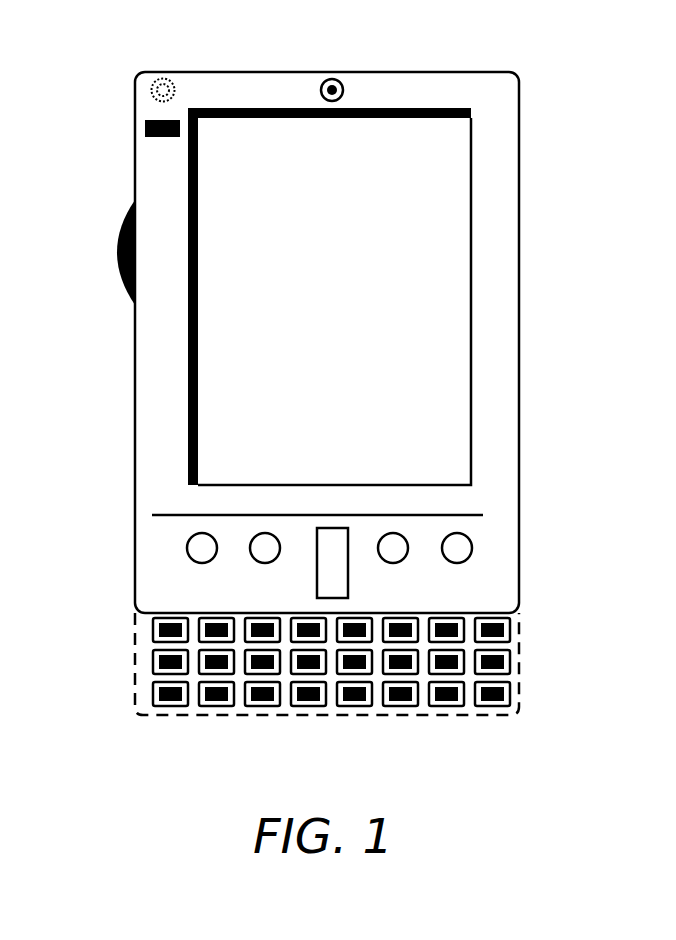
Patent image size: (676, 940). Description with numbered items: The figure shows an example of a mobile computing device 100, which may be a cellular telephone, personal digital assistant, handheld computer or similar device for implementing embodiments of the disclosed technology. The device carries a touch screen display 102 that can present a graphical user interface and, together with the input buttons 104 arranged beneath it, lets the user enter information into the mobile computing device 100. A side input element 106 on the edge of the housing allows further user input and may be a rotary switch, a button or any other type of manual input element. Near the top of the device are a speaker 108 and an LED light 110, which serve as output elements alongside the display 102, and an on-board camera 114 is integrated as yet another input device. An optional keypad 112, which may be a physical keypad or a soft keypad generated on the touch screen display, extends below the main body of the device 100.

The mobile computing device 100 is at (521, 85).
The touch screen display 102 is at (217, 432).
The input buttons 104 is at (457, 562).
The side input element 106 is at (118, 230).
The speaker 108 is at (150, 90).
The LED light 110 is at (146, 128).
The keypad 112 is at (137, 688).
The on-board camera 114 is at (341, 82).